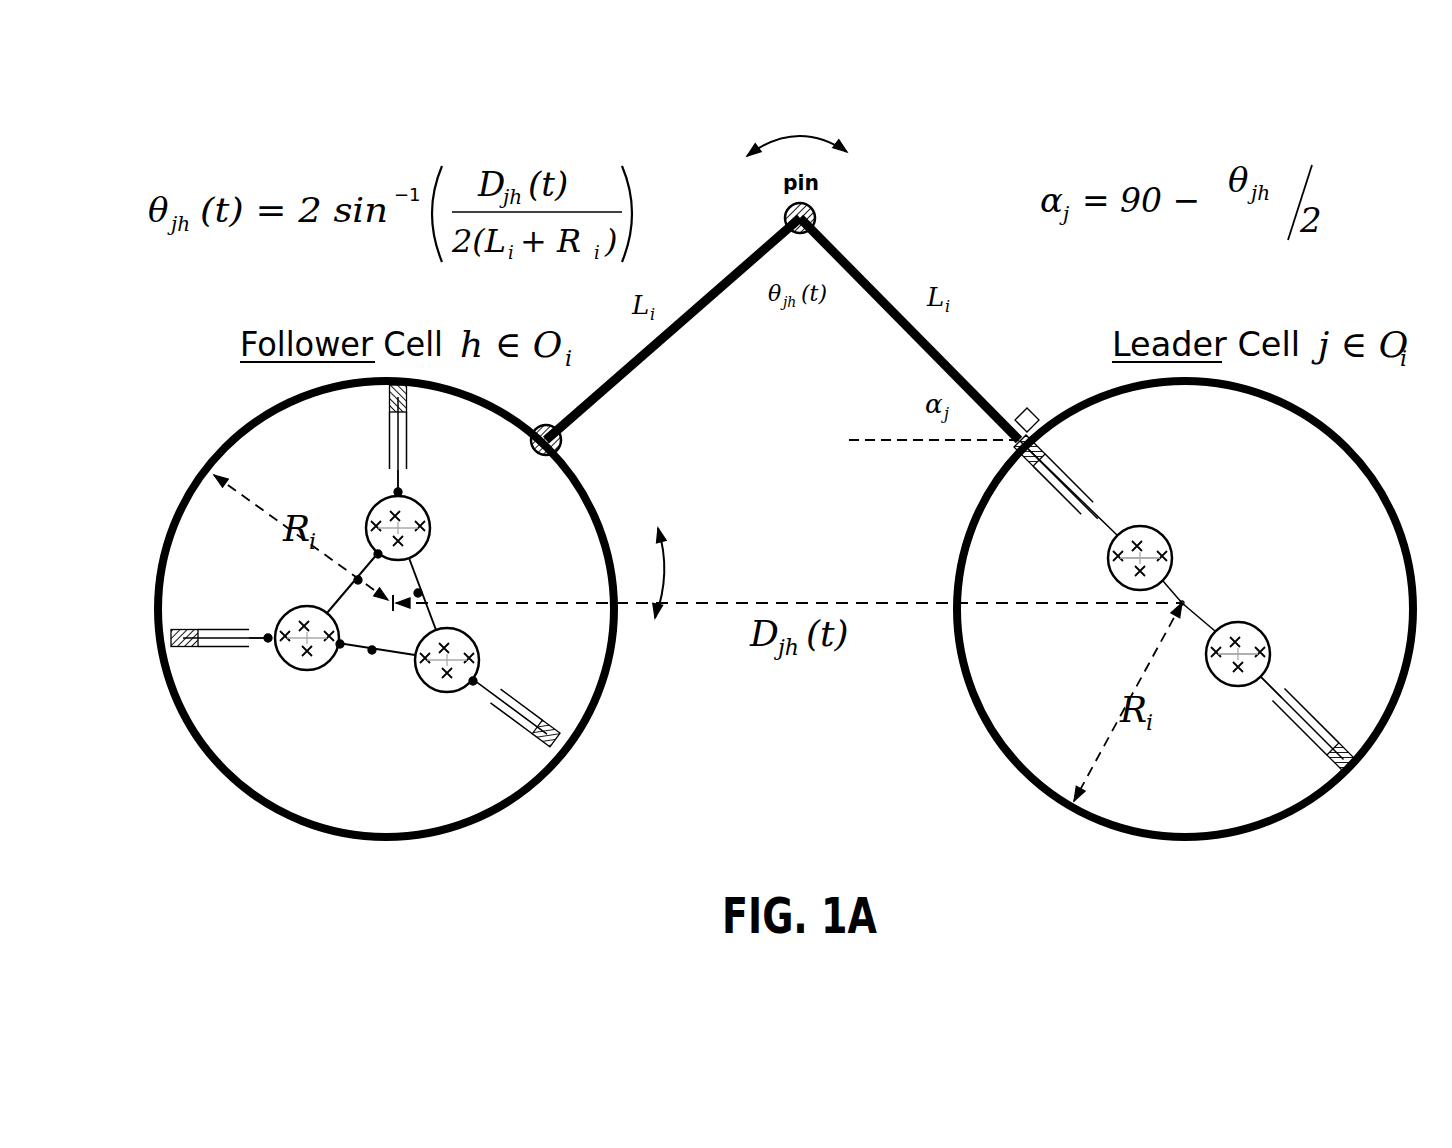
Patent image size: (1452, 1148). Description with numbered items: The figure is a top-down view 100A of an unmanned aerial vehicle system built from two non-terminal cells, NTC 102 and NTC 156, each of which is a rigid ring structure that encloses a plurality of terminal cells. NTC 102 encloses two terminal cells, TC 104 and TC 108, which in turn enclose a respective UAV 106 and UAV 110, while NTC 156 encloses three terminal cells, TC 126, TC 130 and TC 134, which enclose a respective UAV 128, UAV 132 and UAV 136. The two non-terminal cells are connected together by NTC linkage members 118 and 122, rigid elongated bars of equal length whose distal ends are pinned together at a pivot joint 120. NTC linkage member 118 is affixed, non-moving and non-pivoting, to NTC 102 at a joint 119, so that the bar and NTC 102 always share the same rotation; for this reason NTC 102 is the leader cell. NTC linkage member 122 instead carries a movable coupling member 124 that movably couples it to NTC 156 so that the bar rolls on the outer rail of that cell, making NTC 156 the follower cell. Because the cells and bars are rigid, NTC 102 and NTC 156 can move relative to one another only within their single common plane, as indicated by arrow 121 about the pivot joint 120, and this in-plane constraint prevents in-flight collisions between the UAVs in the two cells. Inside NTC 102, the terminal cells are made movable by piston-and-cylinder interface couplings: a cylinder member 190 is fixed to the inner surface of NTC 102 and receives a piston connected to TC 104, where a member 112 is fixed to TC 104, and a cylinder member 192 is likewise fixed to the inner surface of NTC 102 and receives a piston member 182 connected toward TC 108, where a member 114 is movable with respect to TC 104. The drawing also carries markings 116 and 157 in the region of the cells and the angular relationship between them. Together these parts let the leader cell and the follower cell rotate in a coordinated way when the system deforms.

The top-down view 100A is at (297, 100).
The non-terminal cell 102 is at (1355, 448).
The terminal cell 104 is at (1168, 550).
The UAV 106 is at (1140, 568).
The terminal cell 108 is at (1258, 630).
The UAV 110 is at (1232, 688).
The member 112 is at (1170, 585).
The member 114 is at (1200, 625).
The leader cell center point 116 is at (1192, 600).
The NTC linkage member 118 is at (978, 380).
The joint 119 is at (1008, 452).
The pivot joint 120 is at (816, 210).
The arrow 121 is at (823, 132).
The NTC linkage member 122 is at (672, 330).
The movable coupling member 124 is at (561, 446).
The terminal cell 126 is at (423, 505).
The UAV 128 is at (405, 535).
The terminal cell 130 is at (470, 640).
The UAV 132 is at (450, 660).
The terminal cell 134 is at (325, 665).
The UAV 136 is at (305, 640).
The non-terminal cell 156 is at (535, 785).
The rotation of follower cell 157 is at (668, 558).
The piston member 182 is at (1278, 688).
The cylinder member 190 is at (1078, 488).
The cylinder member 192 is at (1329, 714).